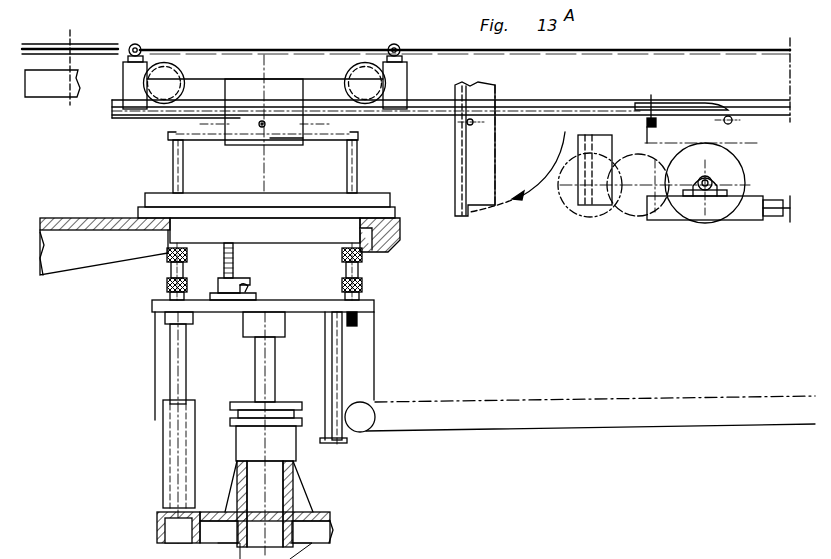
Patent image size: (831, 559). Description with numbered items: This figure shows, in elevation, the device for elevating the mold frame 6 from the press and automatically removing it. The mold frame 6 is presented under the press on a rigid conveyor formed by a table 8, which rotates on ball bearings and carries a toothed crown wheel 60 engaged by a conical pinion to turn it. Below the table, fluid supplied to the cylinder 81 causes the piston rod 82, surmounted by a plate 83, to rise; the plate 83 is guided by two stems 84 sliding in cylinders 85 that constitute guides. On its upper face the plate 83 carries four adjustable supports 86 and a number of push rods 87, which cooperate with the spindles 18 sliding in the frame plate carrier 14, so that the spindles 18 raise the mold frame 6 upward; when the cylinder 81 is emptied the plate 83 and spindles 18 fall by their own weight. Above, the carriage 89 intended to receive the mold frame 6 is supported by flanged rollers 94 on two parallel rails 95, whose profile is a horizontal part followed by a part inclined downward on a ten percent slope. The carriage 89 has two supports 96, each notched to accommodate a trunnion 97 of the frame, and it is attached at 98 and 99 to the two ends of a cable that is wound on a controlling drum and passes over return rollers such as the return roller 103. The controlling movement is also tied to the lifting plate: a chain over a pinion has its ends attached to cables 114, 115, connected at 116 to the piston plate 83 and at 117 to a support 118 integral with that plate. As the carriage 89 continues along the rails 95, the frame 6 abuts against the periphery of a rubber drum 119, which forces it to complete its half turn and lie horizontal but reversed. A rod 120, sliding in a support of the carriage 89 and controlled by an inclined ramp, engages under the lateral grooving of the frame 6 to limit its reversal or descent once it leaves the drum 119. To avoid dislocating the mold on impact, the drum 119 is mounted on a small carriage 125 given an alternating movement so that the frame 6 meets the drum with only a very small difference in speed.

The mold frame 6 is at (182, 125).
The table 8 is at (59, 219).
The frame plate carrier 14 is at (379, 196).
The spindles 18 is at (176, 171).
The toothed crown wheel 60 is at (392, 252).
The cylinder 81 is at (252, 440).
The piston rod 82 is at (262, 378).
The plate 83 is at (311, 312).
The stems 84 is at (178, 352).
The cylinders 85 is at (178, 474).
The adjustable supports 86 is at (172, 277).
The push rods 87 is at (236, 272).
The carriage 89 is at (212, 86).
The flanged rollers 94 is at (170, 66).
The rails 95 is at (113, 112).
The supports 96 is at (290, 146).
The trunnion 97 is at (261, 127).
The cable attachment point 98 is at (396, 46).
The cable attachment point 99 is at (135, 44).
The return roller 103 is at (28, 46).
The cable 114 is at (514, 402).
The cable 115 is at (515, 430).
The cable attachment point 116 is at (360, 313).
The cable attachment point 117 is at (344, 441).
The support 118 is at (340, 377).
The rubber drum 119 is at (636, 222).
The rod 120 is at (696, 109).
The small carriage 125 is at (748, 214).